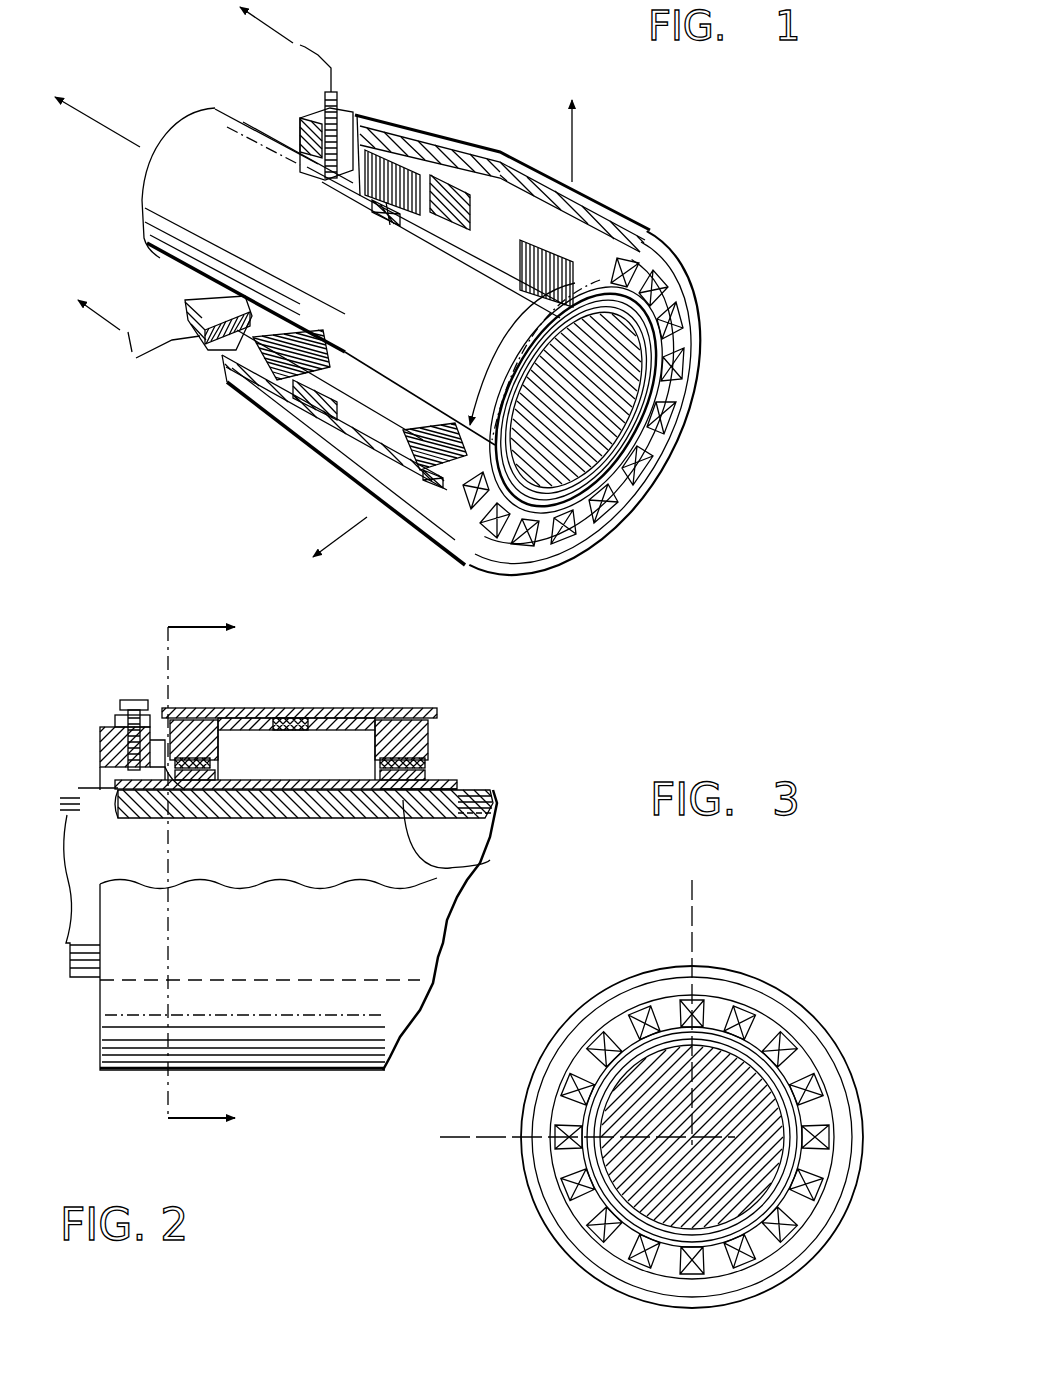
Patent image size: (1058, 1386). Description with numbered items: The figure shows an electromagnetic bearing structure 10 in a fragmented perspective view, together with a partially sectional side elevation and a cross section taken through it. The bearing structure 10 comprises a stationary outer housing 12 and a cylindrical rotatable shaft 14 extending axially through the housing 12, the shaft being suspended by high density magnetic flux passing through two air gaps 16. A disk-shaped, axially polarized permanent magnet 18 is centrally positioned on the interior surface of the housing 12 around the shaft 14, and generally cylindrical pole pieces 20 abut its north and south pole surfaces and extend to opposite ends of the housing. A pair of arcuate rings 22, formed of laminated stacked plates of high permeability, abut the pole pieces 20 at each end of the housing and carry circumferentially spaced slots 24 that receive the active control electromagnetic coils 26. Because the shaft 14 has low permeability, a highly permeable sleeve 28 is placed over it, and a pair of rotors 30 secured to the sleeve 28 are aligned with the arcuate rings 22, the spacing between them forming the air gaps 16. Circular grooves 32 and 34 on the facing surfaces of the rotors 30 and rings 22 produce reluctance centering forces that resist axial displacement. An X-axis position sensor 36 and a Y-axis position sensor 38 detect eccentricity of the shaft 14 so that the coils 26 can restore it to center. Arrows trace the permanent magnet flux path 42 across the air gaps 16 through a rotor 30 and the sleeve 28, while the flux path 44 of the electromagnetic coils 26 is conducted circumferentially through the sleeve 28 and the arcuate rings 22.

In FIG. 1, the electromagnetic bearing structure 10 is at (625, 114).
In FIG. 2, the electromagnetic bearing structure 10 is at (145, 632).
In FIG. 3, the electromagnetic bearing structure 10 is at (750, 930).
In FIG. 1, the stationary outer housing 12 is at (656, 217).
In FIG. 2, the stationary outer housing 12 is at (362, 697).
In FIG. 3, the stationary outer housing 12 is at (580, 1267).
In FIG. 1, the rotatable shaft 14 is at (160, 200).
In FIG. 2, the rotatable shaft 14 is at (473, 833).
In FIG. 3, the rotatable shaft 14 is at (723, 1183).
In FIG. 1, the air gaps 16 is at (380, 192).
In FIG. 2, the air gaps 16 is at (430, 773).
In FIG. 3, the air gaps 16 is at (627, 1042).
In FIG. 1, the permanent magnet 18 is at (462, 178).
In FIG. 2, the permanent magnet 18 is at (307, 740).
In FIG. 1, the pole pieces 20 is at (372, 135).
In FIG. 2, the pole pieces 20 is at (260, 717).
In FIG. 1, the arcuate rings 22 is at (340, 205).
In FIG. 2, the arcuate rings 22 is at (393, 733).
In FIG. 3, the arcuate rings 22 is at (605, 1195).
In FIG. 1, the slots 24 is at (643, 347).
In FIG. 1, the electromagnetic coils 26 is at (637, 450).
In FIG. 3, the electromagnetic coils 26 is at (767, 1057).
In FIG. 1, the sleeve 28 is at (570, 490).
In FIG. 2, the sleeve 28 is at (453, 790).
In FIG. 3, the sleeve 28 is at (598, 1150).
In FIG. 1, the rotors 30 is at (600, 462).
In FIG. 2, the rotors 30 is at (437, 783).
In FIG. 3, the rotors 30 is at (595, 1095).
In FIG. 2, the circular grooves 32 is at (190, 750).
In FIG. 2, the circular grooves 34 is at (173, 773).
In FIG. 1, the X-axis position sensor 36 is at (183, 357).
In FIG. 1, the Y-axis position sensor 38 is at (345, 112).
In FIG. 2, the Y-axis position sensor 38 is at (130, 705).
In FIG. 1, the magnetic flux path 42 is at (432, 170).
In FIG. 1, the magnetic flux path 44 is at (660, 290).